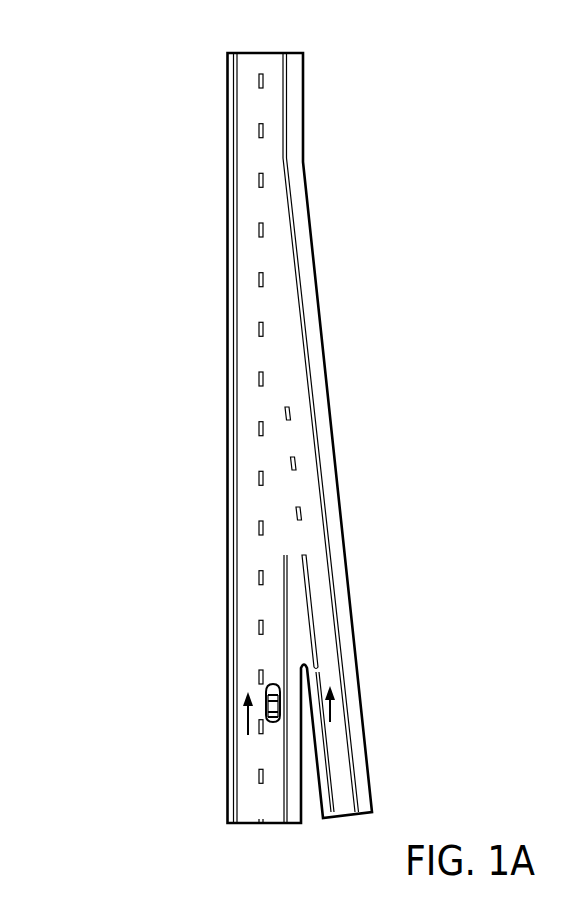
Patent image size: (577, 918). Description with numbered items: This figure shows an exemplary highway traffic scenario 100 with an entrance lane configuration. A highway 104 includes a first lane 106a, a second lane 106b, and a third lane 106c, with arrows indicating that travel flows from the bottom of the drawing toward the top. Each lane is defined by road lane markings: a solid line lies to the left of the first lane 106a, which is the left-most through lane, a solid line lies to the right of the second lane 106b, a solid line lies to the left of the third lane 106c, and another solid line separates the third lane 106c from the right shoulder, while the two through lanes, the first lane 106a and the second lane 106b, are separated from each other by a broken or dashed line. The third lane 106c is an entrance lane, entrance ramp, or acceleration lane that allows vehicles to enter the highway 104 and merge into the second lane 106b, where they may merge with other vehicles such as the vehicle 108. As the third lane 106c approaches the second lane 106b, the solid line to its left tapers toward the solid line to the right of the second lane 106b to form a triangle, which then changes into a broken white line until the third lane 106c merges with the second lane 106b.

The highway traffic scenario 100 is at (410, 59).
The highway 104 is at (227, 220).
The first lane 106a is at (252, 67).
The second lane 106b is at (277, 68).
The third lane 106c is at (323, 602).
The vehicle 108 is at (268, 688).